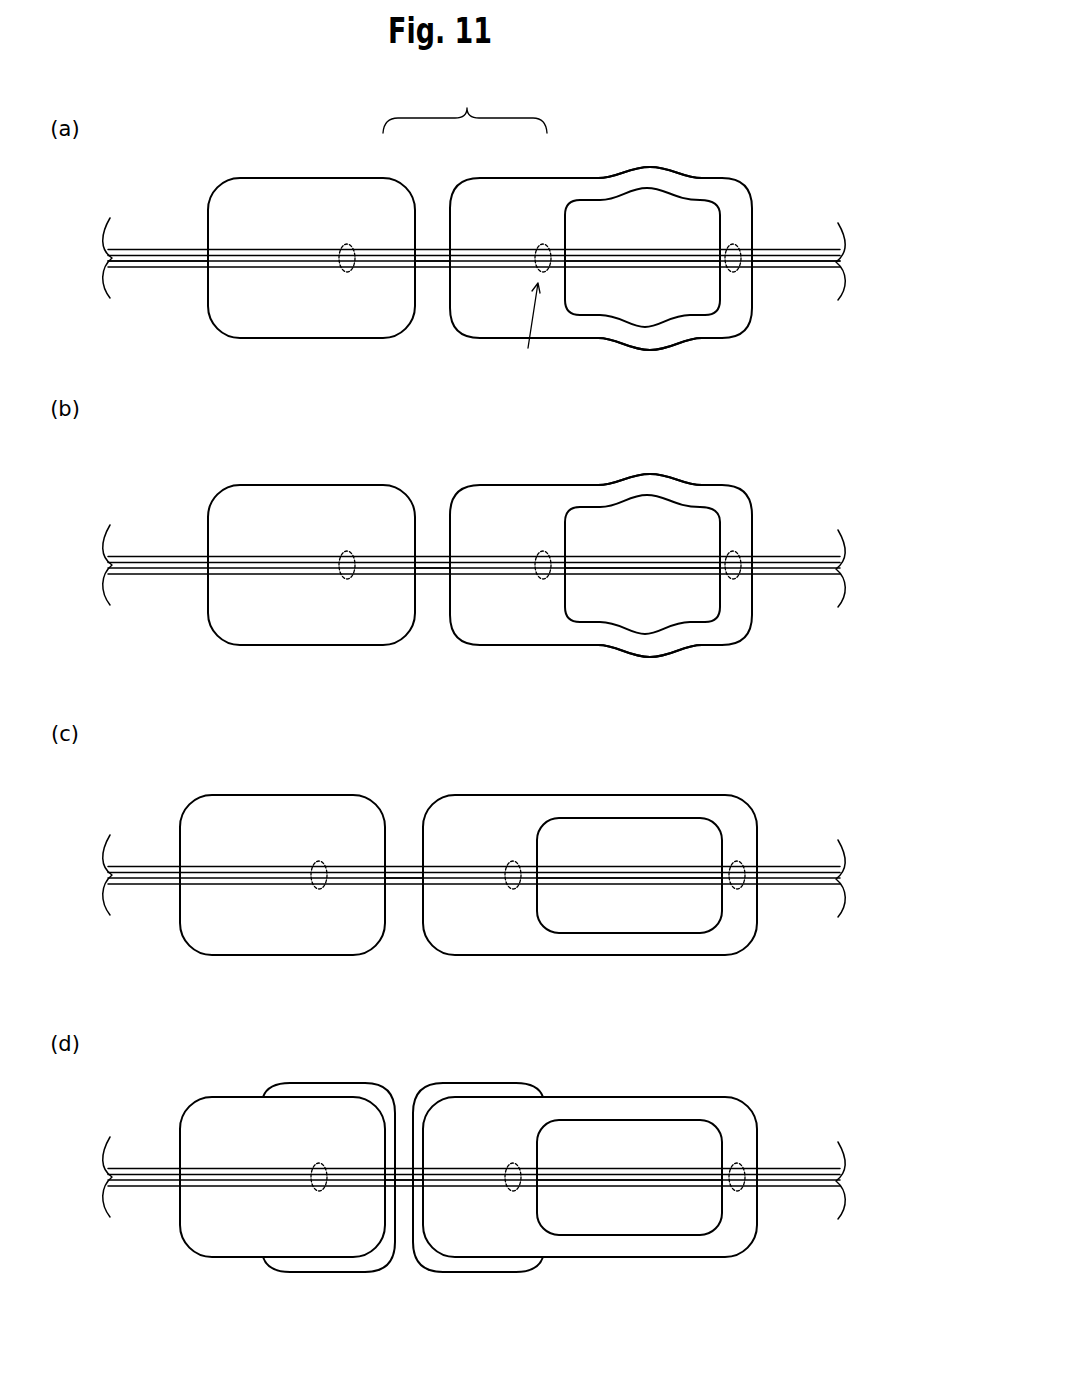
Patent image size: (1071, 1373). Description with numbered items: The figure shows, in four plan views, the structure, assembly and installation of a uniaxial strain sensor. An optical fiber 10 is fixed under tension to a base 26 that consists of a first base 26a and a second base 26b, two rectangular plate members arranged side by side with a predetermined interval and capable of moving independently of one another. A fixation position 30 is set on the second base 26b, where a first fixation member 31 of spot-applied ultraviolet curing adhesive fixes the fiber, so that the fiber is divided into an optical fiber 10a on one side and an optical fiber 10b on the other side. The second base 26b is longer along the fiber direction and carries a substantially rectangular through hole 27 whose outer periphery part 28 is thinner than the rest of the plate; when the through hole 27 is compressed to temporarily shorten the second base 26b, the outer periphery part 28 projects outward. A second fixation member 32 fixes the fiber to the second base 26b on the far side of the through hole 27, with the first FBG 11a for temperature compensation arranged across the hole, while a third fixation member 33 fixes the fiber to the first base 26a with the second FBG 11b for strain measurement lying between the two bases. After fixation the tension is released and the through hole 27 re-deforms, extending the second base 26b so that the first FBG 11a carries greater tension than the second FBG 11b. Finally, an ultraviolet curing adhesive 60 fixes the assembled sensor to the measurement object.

The optical fiber 10 is at (799, 234).
The optical fiber (one side of fixation position) 10a is at (827, 273).
The optical fiber (other side of fixation position) 10b is at (152, 270).
The first FBG 11a is at (607, 263).
The second FBG 11b is at (433, 268).
The base 26 is at (465, 107).
The first base 26a is at (383, 178).
The second base 26b is at (497, 178).
The through hole 27 is at (712, 302).
The outer periphery part 28 is at (668, 168).
The fixation position 30 is at (523, 330).
The first fixation member 31 is at (551, 666).
The second fixation member 32 is at (758, 666).
The third fixation member 33 is at (317, 666).
The ultraviolet curing adhesive 60 is at (348, 1083).